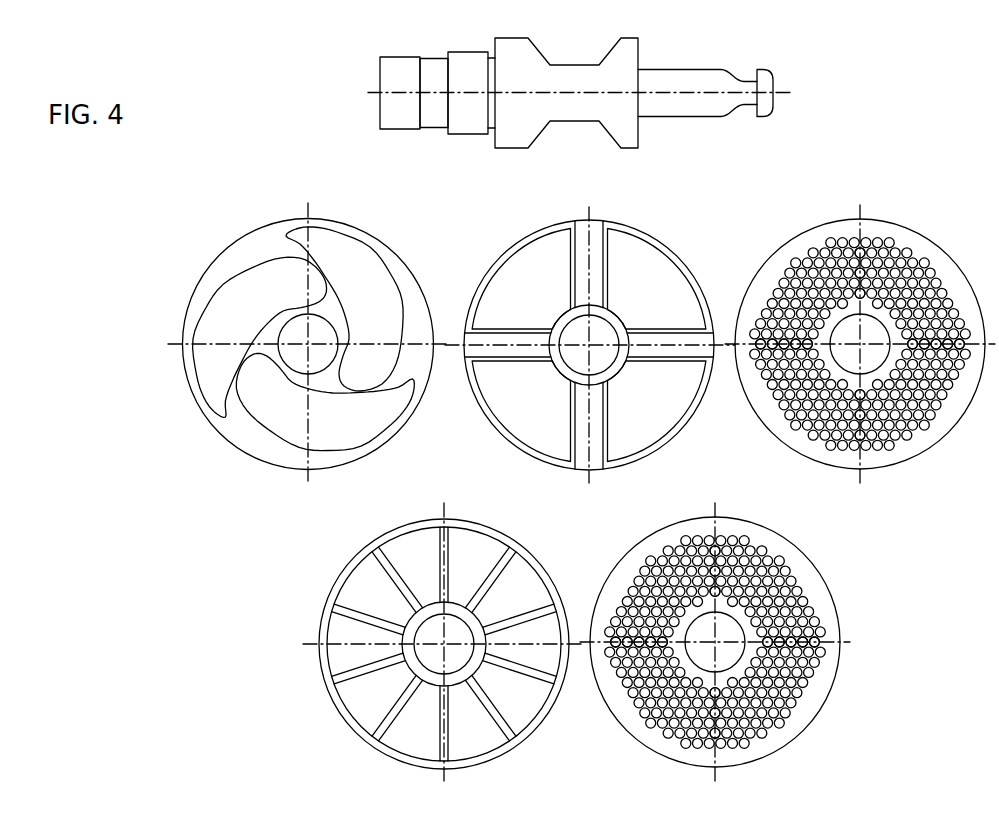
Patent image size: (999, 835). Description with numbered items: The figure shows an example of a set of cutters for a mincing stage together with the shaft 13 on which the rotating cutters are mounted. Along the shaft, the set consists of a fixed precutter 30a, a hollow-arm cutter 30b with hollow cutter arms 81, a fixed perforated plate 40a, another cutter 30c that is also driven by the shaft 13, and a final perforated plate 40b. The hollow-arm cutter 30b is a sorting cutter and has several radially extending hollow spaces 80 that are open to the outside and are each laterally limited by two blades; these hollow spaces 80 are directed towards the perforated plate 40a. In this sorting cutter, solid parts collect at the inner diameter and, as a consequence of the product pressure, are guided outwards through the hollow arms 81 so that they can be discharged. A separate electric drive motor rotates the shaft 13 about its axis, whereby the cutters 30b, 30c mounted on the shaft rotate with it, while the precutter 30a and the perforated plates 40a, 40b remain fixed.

The shaft 13 is at (713, 70).
The fixed precutter 30a is at (241, 448).
The hollow-arm cutter 30b is at (518, 446).
The cutter 30c is at (372, 747).
The fixed perforated plate 40a is at (788, 448).
The final perforated plate 40b is at (643, 746).
The hollow spaces 80 is at (597, 222).
The hollow cutter arms 81 is at (568, 252).